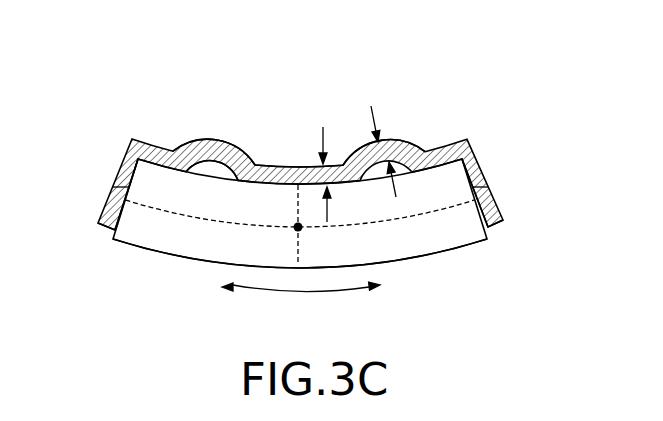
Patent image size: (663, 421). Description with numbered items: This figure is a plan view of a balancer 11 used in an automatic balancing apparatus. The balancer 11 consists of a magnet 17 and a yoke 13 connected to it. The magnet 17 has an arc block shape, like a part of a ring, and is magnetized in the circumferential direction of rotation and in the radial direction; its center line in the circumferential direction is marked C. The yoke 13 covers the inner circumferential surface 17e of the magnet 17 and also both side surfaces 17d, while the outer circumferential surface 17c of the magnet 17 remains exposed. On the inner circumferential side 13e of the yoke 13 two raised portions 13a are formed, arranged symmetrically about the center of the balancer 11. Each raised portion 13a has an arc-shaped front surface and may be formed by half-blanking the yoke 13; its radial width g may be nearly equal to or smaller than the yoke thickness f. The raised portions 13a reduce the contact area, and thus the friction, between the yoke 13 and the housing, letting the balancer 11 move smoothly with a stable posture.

The balancer 11 is at (327, 76).
The yoke 13 is at (462, 136).
The raised portion 13a is at (221, 147).
The inner circumferential side of the yoke 13e is at (304, 165).
The magnet 17 is at (455, 233).
The outer circumferential surface 17c is at (187, 265).
The side surfaces 17d is at (115, 190).
The inner circumferential surface 17e is at (198, 173).